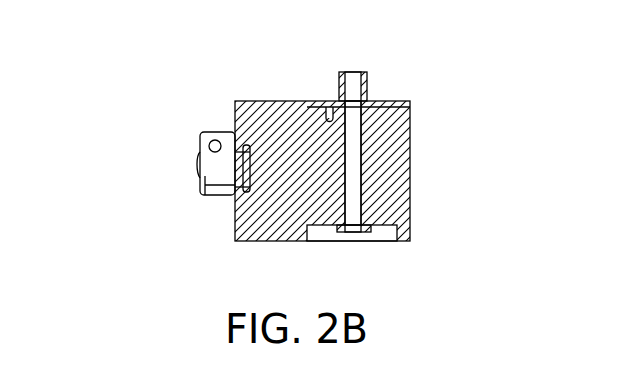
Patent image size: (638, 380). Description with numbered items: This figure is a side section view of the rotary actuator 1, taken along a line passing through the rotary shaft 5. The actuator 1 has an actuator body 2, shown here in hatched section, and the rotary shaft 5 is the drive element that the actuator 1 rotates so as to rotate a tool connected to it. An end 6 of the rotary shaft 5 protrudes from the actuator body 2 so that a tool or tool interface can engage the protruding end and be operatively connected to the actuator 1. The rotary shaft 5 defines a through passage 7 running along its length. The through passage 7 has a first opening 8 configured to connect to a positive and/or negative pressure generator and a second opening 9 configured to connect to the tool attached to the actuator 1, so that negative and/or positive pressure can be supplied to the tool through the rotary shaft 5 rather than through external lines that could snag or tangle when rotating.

The rotary actuator 1 is at (203, 67).
The actuator body 2 is at (243, 222).
The rotary shaft 5 is at (361, 126).
The end of rotary shaft 6 is at (339, 91).
The through passage 7 is at (352, 167).
The first opening 8 is at (355, 232).
The second opening 9 is at (352, 72).